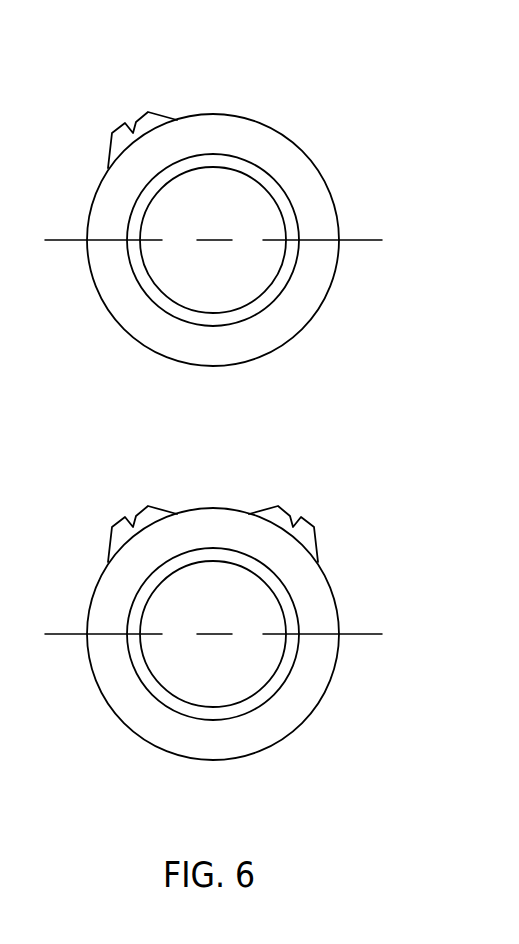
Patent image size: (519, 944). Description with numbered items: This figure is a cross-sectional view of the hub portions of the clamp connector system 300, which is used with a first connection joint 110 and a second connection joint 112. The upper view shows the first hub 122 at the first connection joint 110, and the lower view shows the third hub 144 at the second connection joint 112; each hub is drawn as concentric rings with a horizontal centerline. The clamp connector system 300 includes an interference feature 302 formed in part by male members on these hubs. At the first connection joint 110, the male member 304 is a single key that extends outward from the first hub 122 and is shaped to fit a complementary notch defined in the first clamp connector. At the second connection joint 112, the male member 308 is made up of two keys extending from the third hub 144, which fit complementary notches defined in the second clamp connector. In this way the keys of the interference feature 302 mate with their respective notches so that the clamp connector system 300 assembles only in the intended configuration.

The first connection joint 110 is at (253, 210).
The clamp connector system 300 is at (266, 210).
The interference feature 302 is at (266, 210).
The male member 304 is at (155, 114).
The first hub 122 is at (315, 313).
The second connection joint 112 is at (253, 612).
The male member 308 is at (155, 508).
The third hub 144 is at (315, 707).